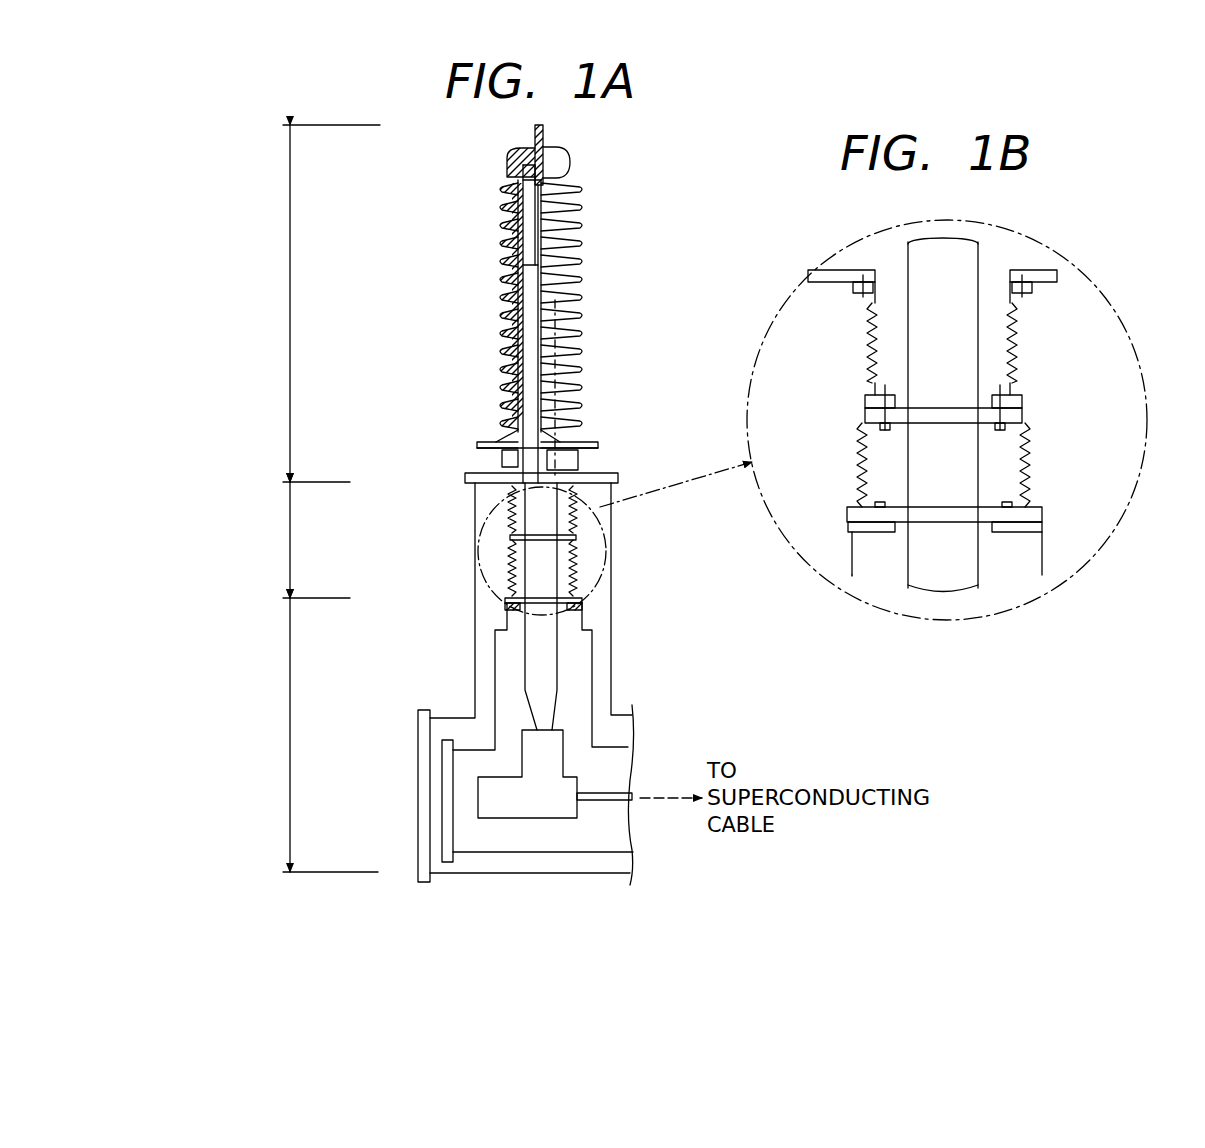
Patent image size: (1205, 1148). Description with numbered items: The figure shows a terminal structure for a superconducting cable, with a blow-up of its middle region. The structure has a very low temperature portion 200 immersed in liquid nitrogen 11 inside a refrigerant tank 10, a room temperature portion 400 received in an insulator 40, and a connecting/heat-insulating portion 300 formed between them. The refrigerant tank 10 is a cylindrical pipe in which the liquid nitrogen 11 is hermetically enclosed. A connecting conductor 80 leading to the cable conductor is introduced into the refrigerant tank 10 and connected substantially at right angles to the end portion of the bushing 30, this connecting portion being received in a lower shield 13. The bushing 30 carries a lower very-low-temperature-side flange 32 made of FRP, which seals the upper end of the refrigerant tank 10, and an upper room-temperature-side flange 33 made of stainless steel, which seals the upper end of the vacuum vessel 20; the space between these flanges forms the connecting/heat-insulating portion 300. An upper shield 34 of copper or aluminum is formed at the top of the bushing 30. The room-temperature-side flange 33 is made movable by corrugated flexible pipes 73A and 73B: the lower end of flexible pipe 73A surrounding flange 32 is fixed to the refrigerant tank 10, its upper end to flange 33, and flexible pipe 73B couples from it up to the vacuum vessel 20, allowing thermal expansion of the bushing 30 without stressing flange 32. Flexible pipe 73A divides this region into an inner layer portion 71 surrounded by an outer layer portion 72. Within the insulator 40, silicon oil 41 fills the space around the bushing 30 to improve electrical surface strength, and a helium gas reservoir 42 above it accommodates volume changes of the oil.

In FIG. 1A, the refrigerant tank 10 is at (472, 748).
In FIG. 1B, the refrigerant tank 10 is at (1055, 555).
In FIG. 1A, the liquid nitrogen 11 is at (470, 840).
In FIG. 1A, the lower shield 13 is at (520, 818).
In FIG. 1A, the vacuum vessel 20 is at (612, 678).
In FIG. 1A, the bushing 30 is at (525, 660).
In FIG. 1B, the bushing 30 is at (905, 262).
In FIG. 1A, the very-low-temperature-side flange 32 is at (585, 600).
In FIG. 1B, the very-low-temperature-side flange 32 is at (947, 515).
In FIG. 1A, the room-temperature-side flange 33 is at (585, 535).
In FIG. 1B, the room-temperature-side flange 33 is at (933, 415).
In FIG. 1A, the upper shield 34 is at (512, 162).
In FIG. 1A, the insulator 40 is at (578, 210).
In FIG. 1A, the silicon oil 41 is at (500, 335).
In FIG. 1A, the gas reservoir 42 is at (520, 200).
In FIG. 1B, the inner layer portion 71 is at (1000, 470).
In FIG. 1B, the outer layer portion 72 is at (1080, 355).
In FIG. 1A, the flexible pipe 73A is at (542, 568).
In FIG. 1B, the flexible pipe 73A is at (855, 470).
In FIG. 1A, the flexible pipe 73B is at (542, 509).
In FIG. 1B, the flexible pipe 73B is at (870, 350).
In FIG. 1A, the connecting conductor 80 is at (600, 800).
In FIG. 1A, the very low temperature portion 200 is at (290, 728).
In FIG. 1A, the connecting/heat-insulating portion 300 is at (290, 530).
In FIG. 1A, the room temperature portion 400 is at (290, 306).